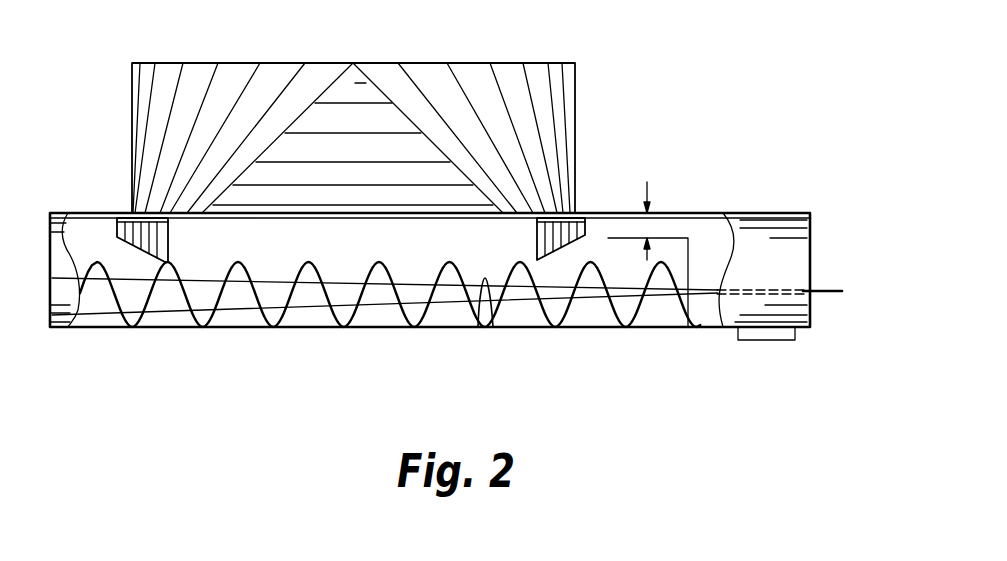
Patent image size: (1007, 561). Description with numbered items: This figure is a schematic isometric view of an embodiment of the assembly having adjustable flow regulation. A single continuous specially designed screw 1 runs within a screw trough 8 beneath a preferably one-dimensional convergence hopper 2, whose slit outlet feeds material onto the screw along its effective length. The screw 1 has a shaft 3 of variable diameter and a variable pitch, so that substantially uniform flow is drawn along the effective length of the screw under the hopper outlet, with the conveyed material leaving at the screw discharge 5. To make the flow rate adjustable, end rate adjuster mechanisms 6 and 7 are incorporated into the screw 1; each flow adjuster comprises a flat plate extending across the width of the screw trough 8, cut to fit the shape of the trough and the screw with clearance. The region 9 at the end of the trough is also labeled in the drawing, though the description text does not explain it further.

The screw 1 is at (300, 316).
The hopper 2 is at (365, 85).
The shaft 3 is at (478, 327).
The screw discharge 5 is at (797, 333).
The end rate adjuster mechanism 6 is at (118, 232).
The end rate adjuster mechanism 7 is at (581, 214).
The screw trough 8 is at (580, 328).
The housing end portion 9 is at (760, 232).